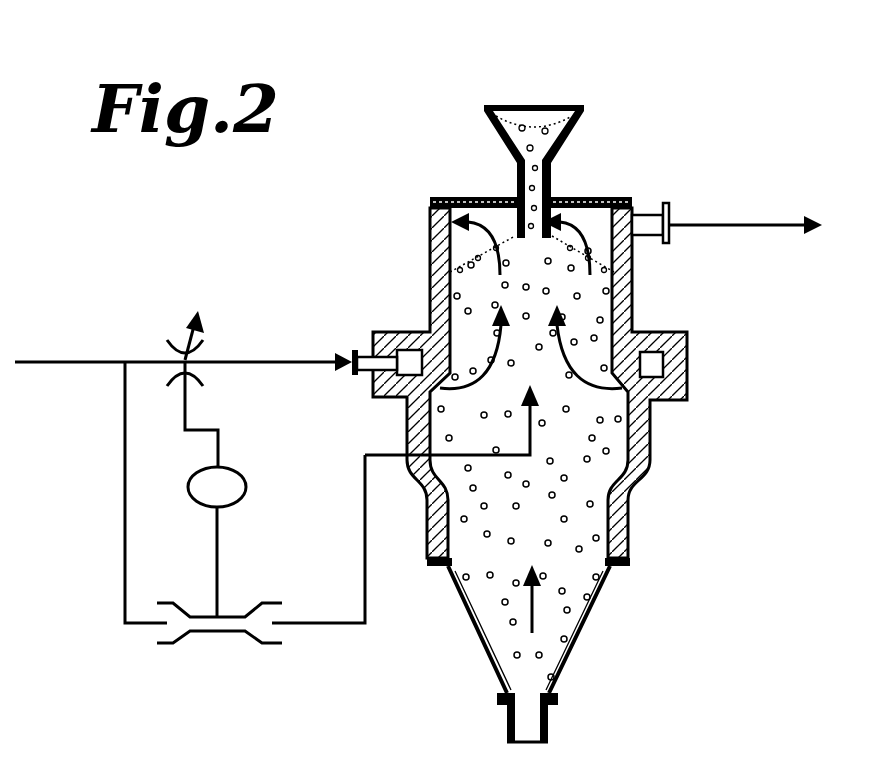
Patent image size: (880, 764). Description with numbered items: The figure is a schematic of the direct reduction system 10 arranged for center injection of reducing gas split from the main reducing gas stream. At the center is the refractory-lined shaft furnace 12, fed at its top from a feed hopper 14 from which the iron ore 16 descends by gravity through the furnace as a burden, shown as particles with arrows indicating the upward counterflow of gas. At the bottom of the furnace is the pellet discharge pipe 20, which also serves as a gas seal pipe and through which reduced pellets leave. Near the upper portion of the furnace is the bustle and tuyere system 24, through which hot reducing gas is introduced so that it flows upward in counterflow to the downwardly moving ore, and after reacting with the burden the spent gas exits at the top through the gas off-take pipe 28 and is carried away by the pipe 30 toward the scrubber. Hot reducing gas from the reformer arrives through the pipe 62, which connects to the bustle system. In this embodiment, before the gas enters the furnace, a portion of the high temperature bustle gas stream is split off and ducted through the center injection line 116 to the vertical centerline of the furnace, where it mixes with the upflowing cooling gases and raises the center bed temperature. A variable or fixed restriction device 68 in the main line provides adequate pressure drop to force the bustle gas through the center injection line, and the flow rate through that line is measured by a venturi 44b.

The system 10 is at (634, 88).
The shaft furnace 12 is at (427, 228).
The feed hopper 14 is at (490, 124).
The iron ore 16 is at (530, 106).
The pellet discharge pipe 20 is at (549, 721).
The bustle and tuyere system 24 is at (406, 349).
The gas off-take pipe 28 is at (643, 213).
The pipe 30 is at (745, 220).
The pipe 62 is at (58, 357).
The restriction device 68 is at (178, 336).
The center injection line 116 is at (124, 488).
The venturi 44b is at (236, 643).